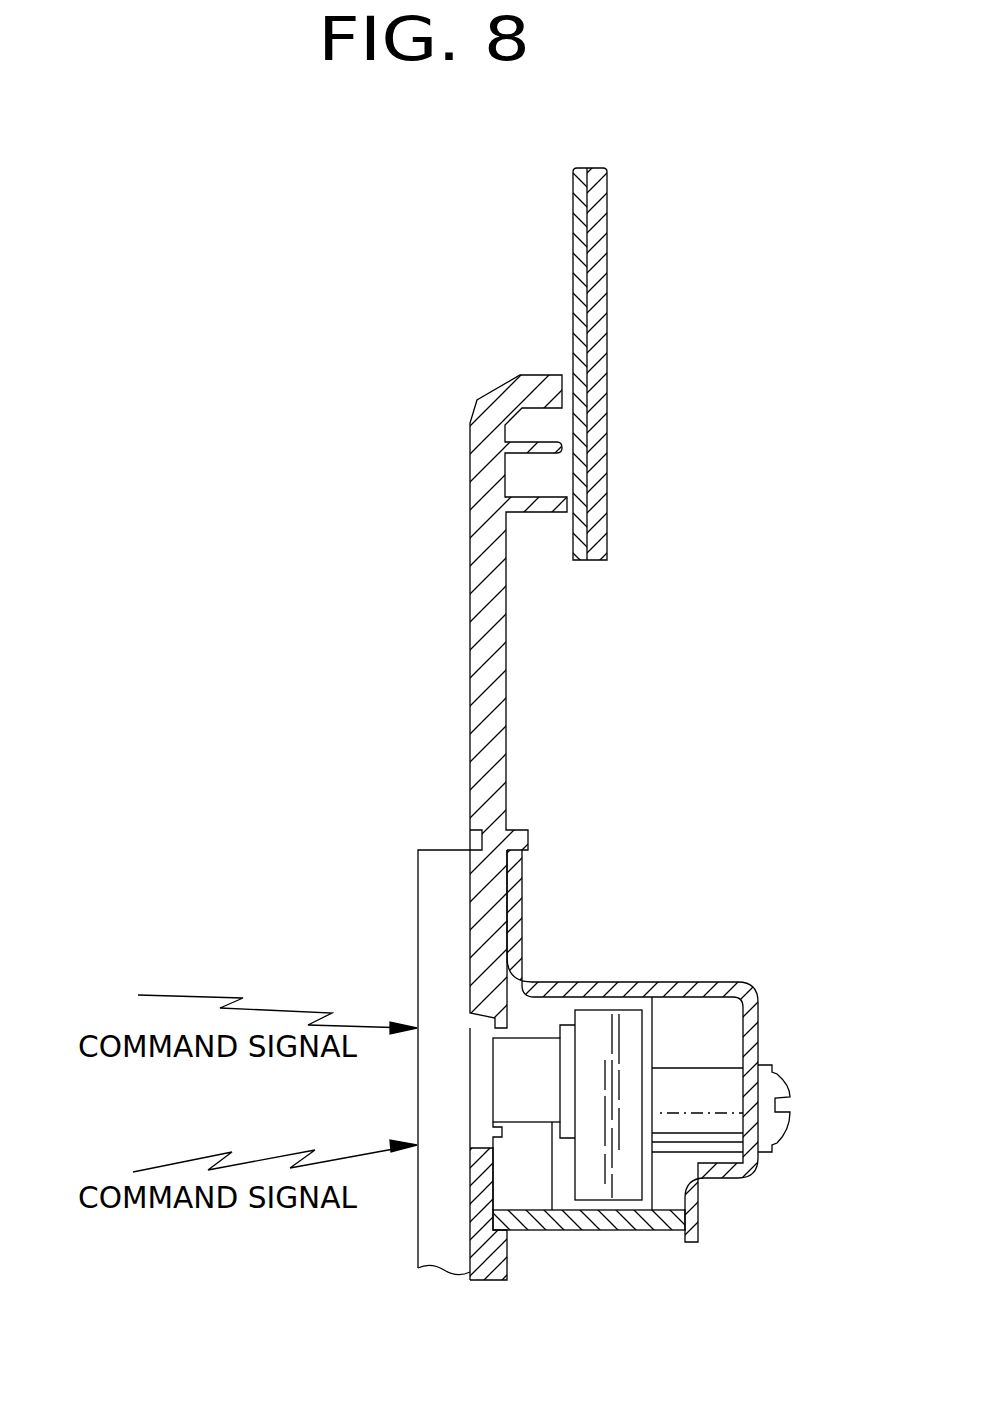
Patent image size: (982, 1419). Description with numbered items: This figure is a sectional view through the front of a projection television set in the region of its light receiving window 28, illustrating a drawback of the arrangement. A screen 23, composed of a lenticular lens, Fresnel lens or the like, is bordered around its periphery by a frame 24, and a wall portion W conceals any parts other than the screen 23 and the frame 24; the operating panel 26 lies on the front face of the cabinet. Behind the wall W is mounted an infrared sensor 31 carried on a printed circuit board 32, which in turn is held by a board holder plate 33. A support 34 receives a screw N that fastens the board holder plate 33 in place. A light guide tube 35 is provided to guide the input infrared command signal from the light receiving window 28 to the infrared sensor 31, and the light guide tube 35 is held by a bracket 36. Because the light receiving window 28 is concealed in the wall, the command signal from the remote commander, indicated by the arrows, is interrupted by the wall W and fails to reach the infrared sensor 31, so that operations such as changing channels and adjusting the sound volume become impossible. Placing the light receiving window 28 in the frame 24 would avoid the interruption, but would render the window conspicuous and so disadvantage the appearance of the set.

The screen 23 is at (573, 285).
The frame 24 is at (468, 483).
The operating panel 26 is at (470, 940).
The wall portion W is at (418, 882).
The light receiving window 28 is at (477, 1095).
The board holder plate 33 is at (662, 982).
The support 34 is at (710, 1080).
The screw N is at (782, 1082).
The light guide tube 35 is at (528, 1115).
The bracket 36 is at (565, 1198).
The infrared sensor 31 is at (625, 1183).
The printed circuit board 32 is at (667, 1225).